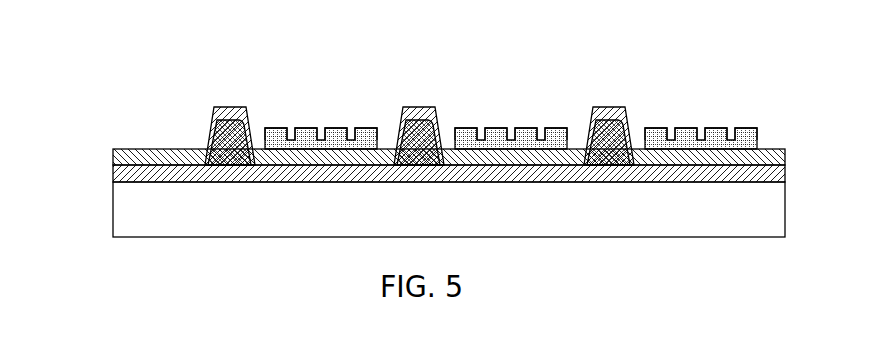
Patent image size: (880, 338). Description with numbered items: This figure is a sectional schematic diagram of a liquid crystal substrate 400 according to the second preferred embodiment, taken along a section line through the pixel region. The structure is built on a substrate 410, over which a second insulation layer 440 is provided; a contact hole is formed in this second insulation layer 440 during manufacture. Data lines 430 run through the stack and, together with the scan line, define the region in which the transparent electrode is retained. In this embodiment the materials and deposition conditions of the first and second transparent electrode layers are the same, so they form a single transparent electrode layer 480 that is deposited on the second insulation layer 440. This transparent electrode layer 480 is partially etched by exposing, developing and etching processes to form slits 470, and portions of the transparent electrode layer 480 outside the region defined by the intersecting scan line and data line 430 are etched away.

The semiconductor device 400 is at (121, 40).
The substrate 410 is at (113, 200).
The data line 430 is at (229, 106).
The second insulation layer 440 is at (150, 148).
The slits 470 is at (292, 139).
The transparent electrode layer 480 is at (277, 127).